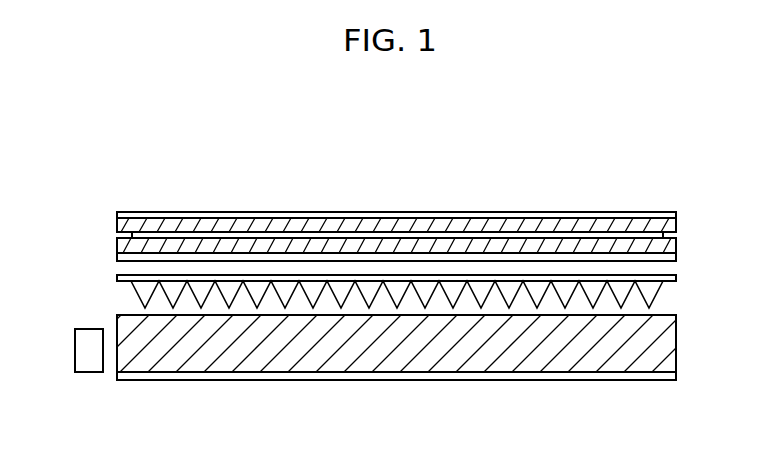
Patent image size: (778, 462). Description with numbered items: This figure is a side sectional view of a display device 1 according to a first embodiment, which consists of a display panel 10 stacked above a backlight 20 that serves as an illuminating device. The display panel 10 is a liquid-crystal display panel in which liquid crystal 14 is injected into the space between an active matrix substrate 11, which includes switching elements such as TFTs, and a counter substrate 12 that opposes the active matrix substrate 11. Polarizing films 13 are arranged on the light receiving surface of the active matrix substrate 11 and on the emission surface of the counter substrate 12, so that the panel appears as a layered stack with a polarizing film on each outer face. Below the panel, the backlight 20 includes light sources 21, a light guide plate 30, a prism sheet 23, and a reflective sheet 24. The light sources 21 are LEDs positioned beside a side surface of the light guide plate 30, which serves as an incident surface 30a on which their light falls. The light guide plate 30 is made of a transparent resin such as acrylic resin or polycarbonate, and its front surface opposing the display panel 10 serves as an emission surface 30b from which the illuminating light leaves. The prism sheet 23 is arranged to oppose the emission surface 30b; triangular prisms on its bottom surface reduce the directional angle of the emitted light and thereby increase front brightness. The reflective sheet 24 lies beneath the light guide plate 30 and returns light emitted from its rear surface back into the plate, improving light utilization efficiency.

The display device 1 is at (641, 153).
The display panel 10 is at (690, 212).
The active matrix substrate 11 is at (117, 246).
The counter substrate 12 is at (117, 225).
The polarizing films 13 is at (123, 213).
The liquid crystal 14 is at (168, 237).
The backlight 20 is at (690, 275).
The light sources 21 is at (85, 372).
The prism sheet 23 is at (134, 292).
The reflective sheet 24 is at (216, 380).
The light guide plate 30 is at (136, 366).
The incident surface 30a is at (117, 362).
The emission surface 30b is at (468, 318).